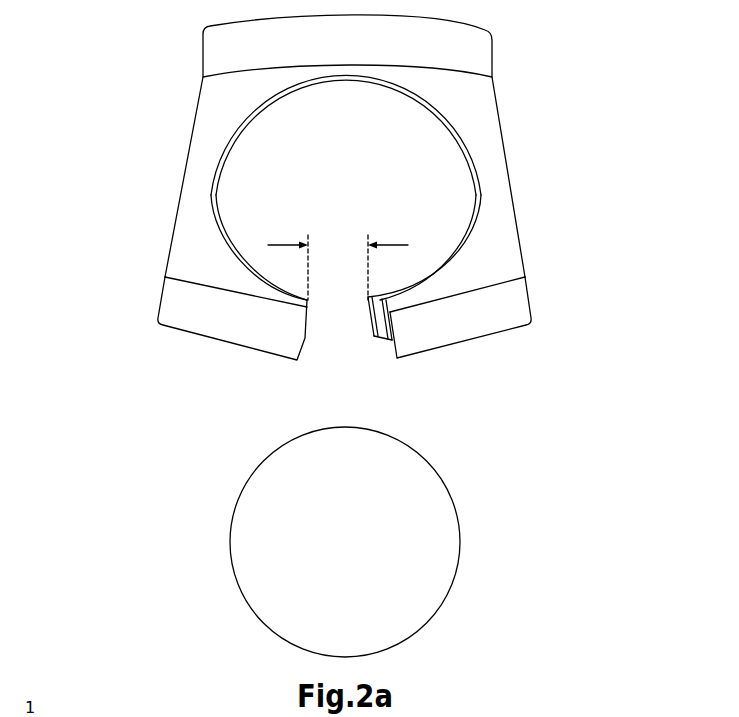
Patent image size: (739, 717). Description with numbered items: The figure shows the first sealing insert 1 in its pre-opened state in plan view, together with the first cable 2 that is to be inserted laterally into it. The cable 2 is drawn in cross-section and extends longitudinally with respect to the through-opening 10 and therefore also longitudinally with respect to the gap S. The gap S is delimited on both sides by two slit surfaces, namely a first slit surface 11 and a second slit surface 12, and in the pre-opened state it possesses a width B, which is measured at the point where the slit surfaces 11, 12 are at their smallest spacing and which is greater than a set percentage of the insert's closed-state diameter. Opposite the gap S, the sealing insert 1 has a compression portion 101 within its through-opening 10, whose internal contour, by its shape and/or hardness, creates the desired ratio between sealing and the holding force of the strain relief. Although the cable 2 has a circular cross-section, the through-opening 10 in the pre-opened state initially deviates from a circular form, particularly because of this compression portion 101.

The first sealing insert 1 is at (119, 111).
The through-opening 10 is at (393, 185).
The compression portion 101 is at (352, 80).
The first slit surface 11 is at (307, 342).
The second slit surface 12 is at (375, 335).
The first cable 2 is at (460, 527).
The gap S is at (340, 317).
The width B is at (338, 267).